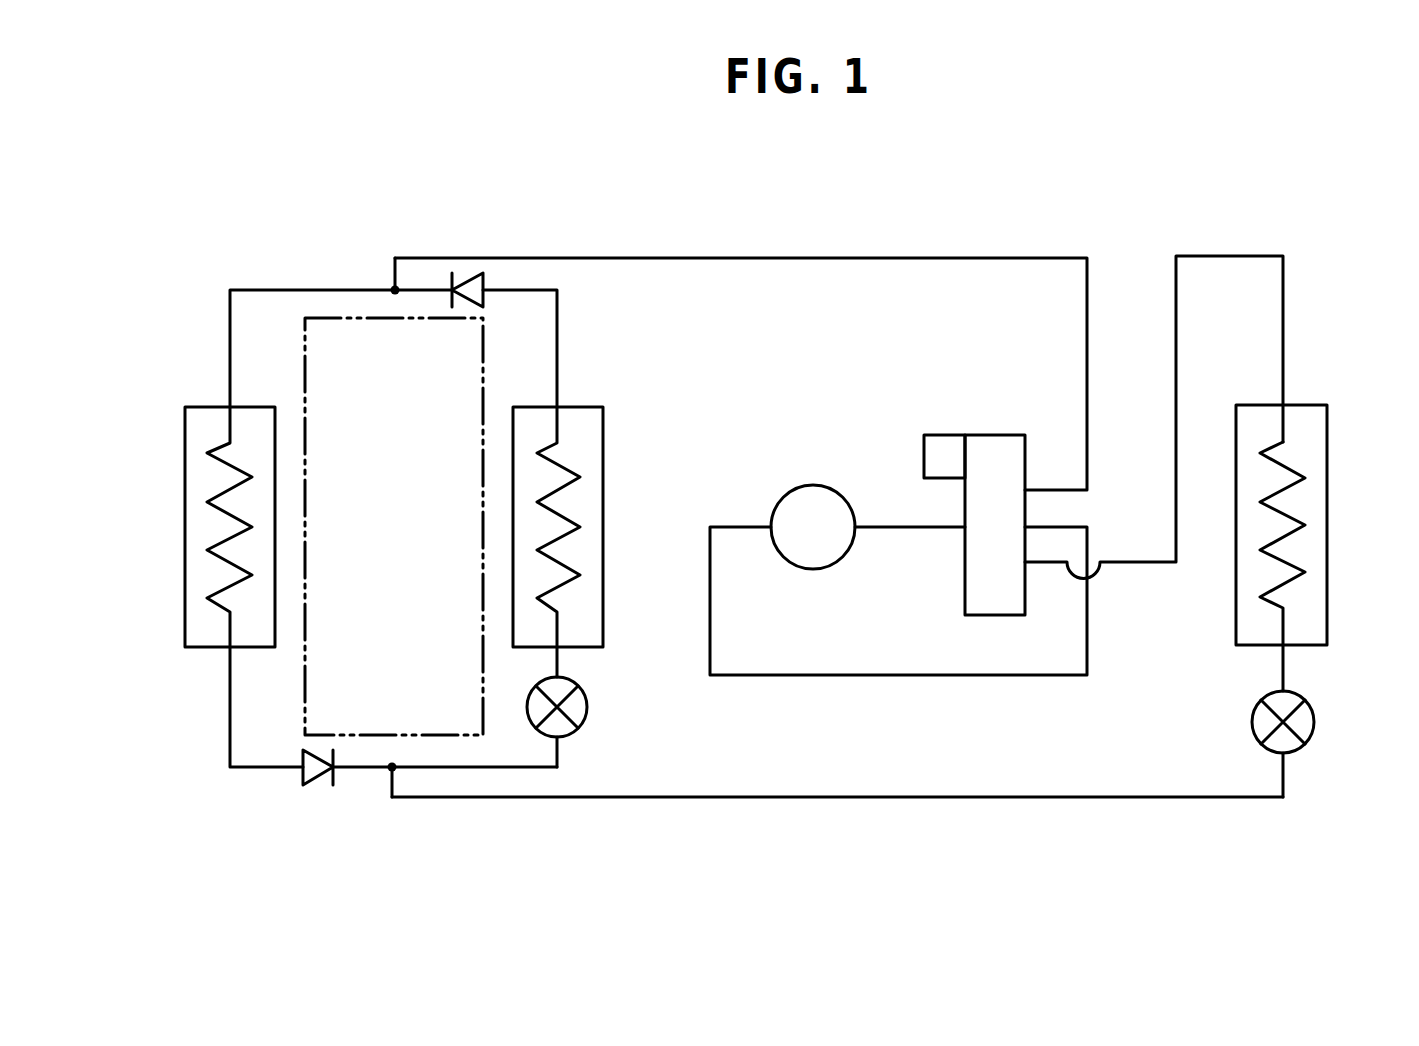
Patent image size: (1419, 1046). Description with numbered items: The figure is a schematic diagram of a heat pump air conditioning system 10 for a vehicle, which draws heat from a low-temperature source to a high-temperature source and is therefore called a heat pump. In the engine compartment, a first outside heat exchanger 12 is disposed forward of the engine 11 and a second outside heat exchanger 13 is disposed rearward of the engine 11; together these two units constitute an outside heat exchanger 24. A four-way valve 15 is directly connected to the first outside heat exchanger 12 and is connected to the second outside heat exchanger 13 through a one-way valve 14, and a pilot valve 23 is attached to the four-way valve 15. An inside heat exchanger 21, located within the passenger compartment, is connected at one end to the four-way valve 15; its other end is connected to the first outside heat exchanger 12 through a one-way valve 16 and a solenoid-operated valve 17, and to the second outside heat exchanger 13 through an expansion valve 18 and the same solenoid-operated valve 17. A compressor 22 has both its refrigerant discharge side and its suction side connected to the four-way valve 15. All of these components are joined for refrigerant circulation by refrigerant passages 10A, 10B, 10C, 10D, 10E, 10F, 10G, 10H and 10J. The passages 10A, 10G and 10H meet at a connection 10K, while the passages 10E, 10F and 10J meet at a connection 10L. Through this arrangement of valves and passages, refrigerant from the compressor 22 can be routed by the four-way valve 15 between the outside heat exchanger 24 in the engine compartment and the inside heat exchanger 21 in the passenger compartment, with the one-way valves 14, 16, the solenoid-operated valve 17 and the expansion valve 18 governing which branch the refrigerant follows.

The heat pump air conditioning system 10 is at (263, 207).
The refrigerant passage 10A is at (788, 257).
The refrigerant passage 10B is at (893, 675).
The refrigerant passage 10C is at (910, 527).
The refrigerant passage 10D is at (1210, 256).
The refrigerant passage 10E is at (797, 797).
The refrigerant passage 10F is at (557, 752).
The refrigerant passage 10G is at (557, 365).
The refrigerant passage 10H is at (230, 335).
The refrigerant passage 10J is at (230, 693).
The connection 10K is at (395, 288).
The connection 10L is at (390, 770).
The engine 11 is at (337, 318).
The first outside heat exchanger 12 is at (185, 495).
The second outside heat exchanger 13 is at (603, 522).
The one-way valve 14 is at (487, 282).
The four-way valve 15 is at (1000, 435).
The one-way valve 16 is at (313, 785).
The solenoid-operated valve 17 is at (1314, 728).
The expansion valve 18 is at (588, 700).
The inside heat exchanger 21 is at (1327, 560).
The compressor 22 is at (813, 485).
The pilot valve 23 is at (940, 435).
The outside heat exchanger 24 is at (237, 803).